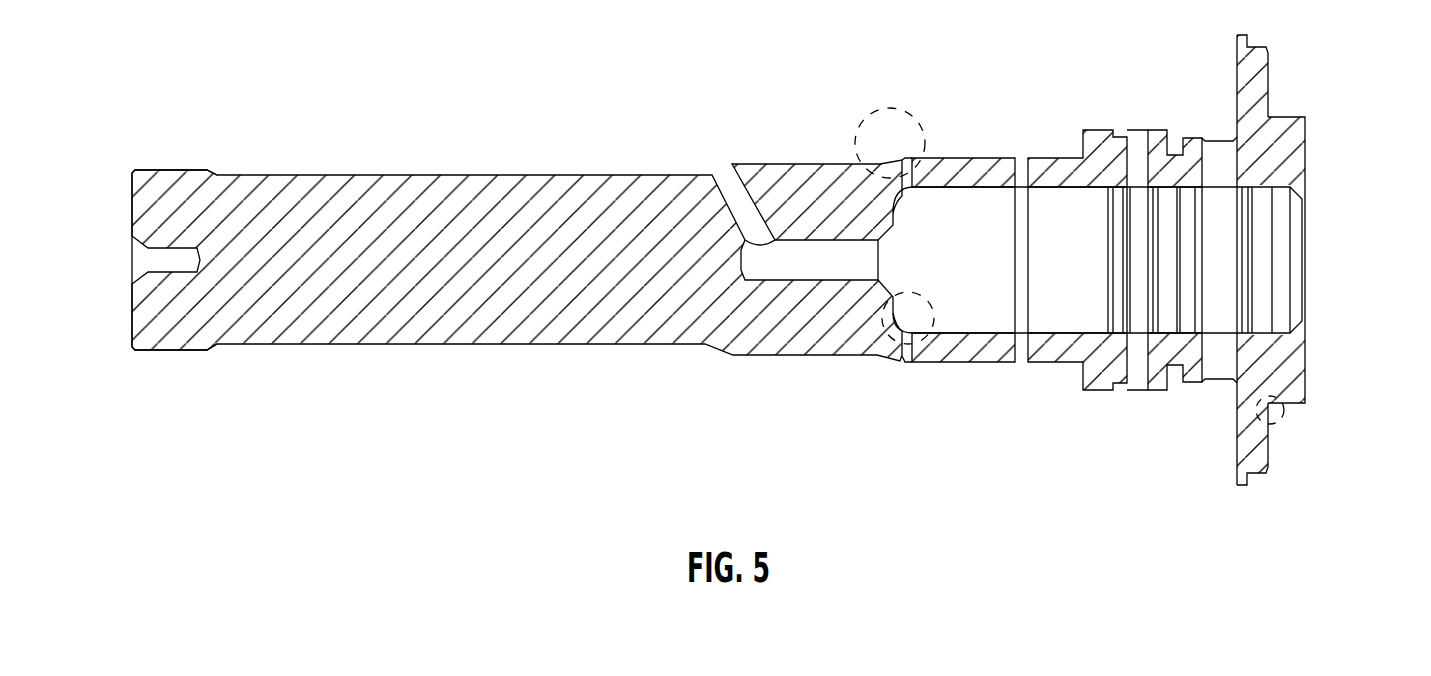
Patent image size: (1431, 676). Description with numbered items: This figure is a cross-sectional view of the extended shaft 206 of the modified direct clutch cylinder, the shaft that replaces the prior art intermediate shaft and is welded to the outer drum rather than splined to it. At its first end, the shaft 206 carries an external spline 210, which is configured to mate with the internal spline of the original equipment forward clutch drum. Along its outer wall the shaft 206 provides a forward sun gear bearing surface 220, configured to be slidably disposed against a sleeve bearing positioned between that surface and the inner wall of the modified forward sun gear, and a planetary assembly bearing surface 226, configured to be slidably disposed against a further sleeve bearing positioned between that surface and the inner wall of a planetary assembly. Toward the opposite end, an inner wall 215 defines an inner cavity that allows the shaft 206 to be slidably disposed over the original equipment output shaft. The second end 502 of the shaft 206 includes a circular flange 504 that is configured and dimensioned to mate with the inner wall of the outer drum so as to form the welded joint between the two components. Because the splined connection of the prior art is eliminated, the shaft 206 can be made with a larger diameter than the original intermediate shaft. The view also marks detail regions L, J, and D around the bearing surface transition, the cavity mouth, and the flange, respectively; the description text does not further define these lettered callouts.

The extended shaft 206 is at (452, 112).
The external spline 210 is at (173, 169).
The forward sun gear bearing surface 220 is at (836, 163).
The inner wall 215 is at (985, 189).
The planetary assembly bearing surface 226 is at (986, 158).
The second end 502 is at (1306, 158).
The circular flange 504 is at (1260, 85).
The detail region L is at (893, 108).
The detail region J is at (920, 292).
The detail region D is at (1280, 421).